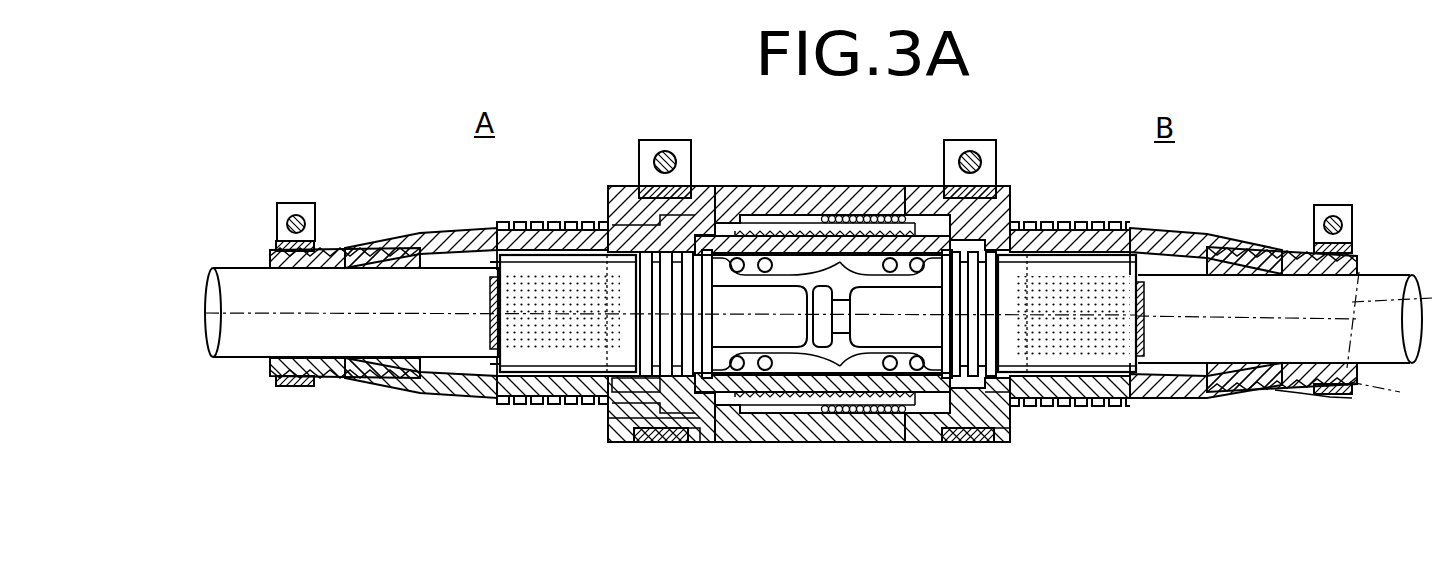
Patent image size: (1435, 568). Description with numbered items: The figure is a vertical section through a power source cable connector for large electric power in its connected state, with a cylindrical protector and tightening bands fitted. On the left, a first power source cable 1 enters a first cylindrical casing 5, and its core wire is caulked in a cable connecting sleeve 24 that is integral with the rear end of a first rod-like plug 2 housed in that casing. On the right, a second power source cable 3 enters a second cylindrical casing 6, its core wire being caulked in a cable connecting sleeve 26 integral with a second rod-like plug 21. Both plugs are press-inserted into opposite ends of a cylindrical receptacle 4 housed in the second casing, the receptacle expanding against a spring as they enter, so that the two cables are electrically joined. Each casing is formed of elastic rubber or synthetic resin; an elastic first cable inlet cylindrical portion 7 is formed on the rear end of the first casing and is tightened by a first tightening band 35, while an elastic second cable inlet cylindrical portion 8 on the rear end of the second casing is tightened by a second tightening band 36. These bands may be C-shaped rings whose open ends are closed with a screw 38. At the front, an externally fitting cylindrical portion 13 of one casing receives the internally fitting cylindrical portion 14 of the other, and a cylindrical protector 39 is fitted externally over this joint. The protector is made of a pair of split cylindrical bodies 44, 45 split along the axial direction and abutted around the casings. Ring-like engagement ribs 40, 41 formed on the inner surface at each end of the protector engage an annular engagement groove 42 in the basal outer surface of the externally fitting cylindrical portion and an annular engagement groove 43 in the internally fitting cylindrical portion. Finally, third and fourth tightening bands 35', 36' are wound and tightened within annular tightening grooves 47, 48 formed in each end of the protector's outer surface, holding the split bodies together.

The first power source cable 1 is at (446, 285).
The first rod-like plug 2 is at (760, 335).
The second power source cable 3 is at (1166, 295).
The cylindrical receptacle 4 is at (808, 262).
The first cylindrical casing 5 is at (616, 226).
The second cylindrical casing 6 is at (1024, 224).
The first cable inlet cylindrical portion 7 is at (345, 378).
The second cable inlet cylindrical portion 8 is at (1276, 390).
The externally fitting cylindrical portion 13 is at (848, 235).
The internally fitting cylindrical portion 14 is at (752, 242).
The second rod-like plug 21 is at (875, 340).
The cable connecting sleeve 24 is at (526, 358).
The cable connecting sleeve 26 is at (1118, 397).
The first tightening band 35 is at (318, 294).
The third tightening band 35' is at (654, 471).
The second tightening band 36 is at (1310, 248).
The fourth tightening band 36' is at (972, 471).
The screw 38 is at (294, 220).
The cylindrical protector 39 is at (780, 194).
The annular engagement rib 40 is at (636, 432).
The annular engagement rib 41 is at (1015, 436).
The annular engagement groove 42 is at (642, 402).
The annular engagement groove 43 is at (1022, 400).
The split cylindrical body 44 is at (895, 192).
The split cylindrical body 45 is at (806, 434).
The annular tightening groove 47 is at (700, 440).
The annular tightening groove 48 is at (936, 434).